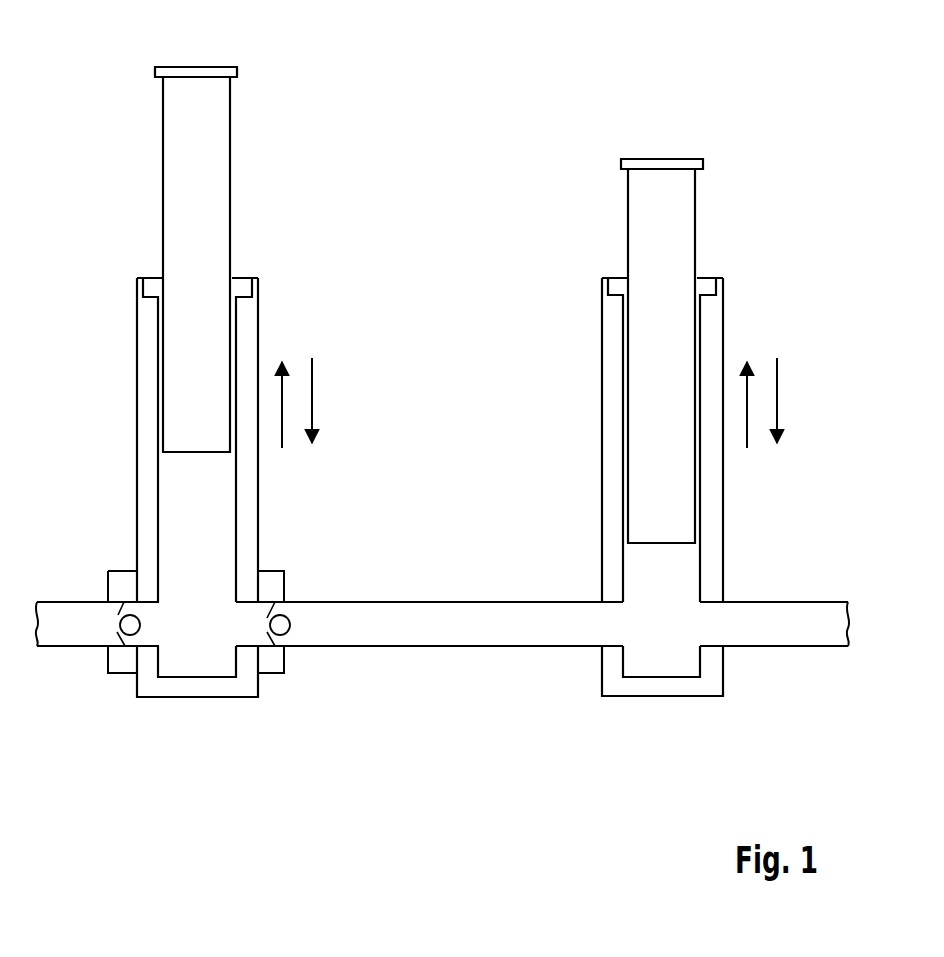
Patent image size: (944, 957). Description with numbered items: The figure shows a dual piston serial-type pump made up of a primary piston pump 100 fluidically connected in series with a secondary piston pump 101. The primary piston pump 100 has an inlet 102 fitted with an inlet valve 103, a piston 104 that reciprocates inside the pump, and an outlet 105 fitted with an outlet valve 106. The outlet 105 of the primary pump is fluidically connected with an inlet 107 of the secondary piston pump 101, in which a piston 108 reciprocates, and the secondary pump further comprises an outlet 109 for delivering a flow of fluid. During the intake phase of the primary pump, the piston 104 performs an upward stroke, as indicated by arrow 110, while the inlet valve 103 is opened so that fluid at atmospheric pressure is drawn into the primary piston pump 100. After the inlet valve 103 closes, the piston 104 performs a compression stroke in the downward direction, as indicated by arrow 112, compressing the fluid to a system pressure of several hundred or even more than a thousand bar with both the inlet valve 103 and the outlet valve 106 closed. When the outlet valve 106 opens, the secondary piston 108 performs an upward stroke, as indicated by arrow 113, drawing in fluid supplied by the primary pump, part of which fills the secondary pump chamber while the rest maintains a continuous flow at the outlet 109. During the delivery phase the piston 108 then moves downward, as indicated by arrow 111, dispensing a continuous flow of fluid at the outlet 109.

The primary piston pump 100 is at (213, 719).
The secondary piston pump 101 is at (678, 719).
The inlet 102 is at (78, 635).
The inlet valve 103 is at (132, 622).
The piston 104 is at (200, 210).
The outlet 105 is at (327, 635).
The outlet valve 106 is at (280, 625).
The inlet 107 is at (560, 633).
The piston 108 is at (665, 218).
The outlet 109 is at (782, 633).
The arrow 110 is at (282, 388).
The arrow 111 is at (777, 414).
The arrow 112 is at (312, 414).
The arrow 113 is at (747, 388).